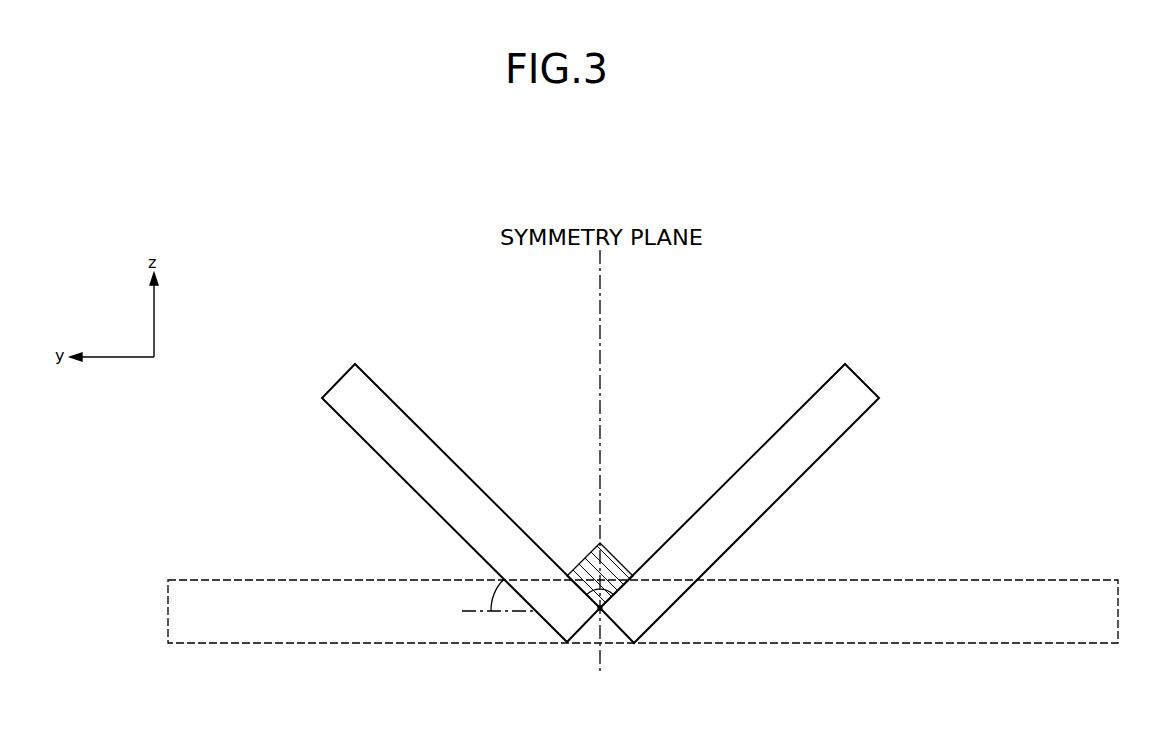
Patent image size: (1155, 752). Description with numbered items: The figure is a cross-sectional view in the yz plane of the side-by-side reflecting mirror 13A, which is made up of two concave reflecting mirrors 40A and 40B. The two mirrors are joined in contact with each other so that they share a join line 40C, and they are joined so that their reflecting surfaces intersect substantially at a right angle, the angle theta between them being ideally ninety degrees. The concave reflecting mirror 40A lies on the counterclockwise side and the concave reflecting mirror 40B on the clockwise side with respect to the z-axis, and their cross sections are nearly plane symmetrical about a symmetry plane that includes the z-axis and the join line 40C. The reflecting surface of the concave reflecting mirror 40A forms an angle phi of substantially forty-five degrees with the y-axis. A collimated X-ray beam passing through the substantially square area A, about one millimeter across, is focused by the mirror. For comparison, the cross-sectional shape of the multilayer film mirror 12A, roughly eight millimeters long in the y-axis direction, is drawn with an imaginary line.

The multilayer film mirror 12A is at (1012, 579).
The side-by-side reflecting mirror 13A is at (895, 348).
The concave reflecting mirror 40A is at (405, 414).
The concave reflecting mirror 40B is at (798, 412).
The join line 40C is at (598, 616).
The area A is at (590, 558).